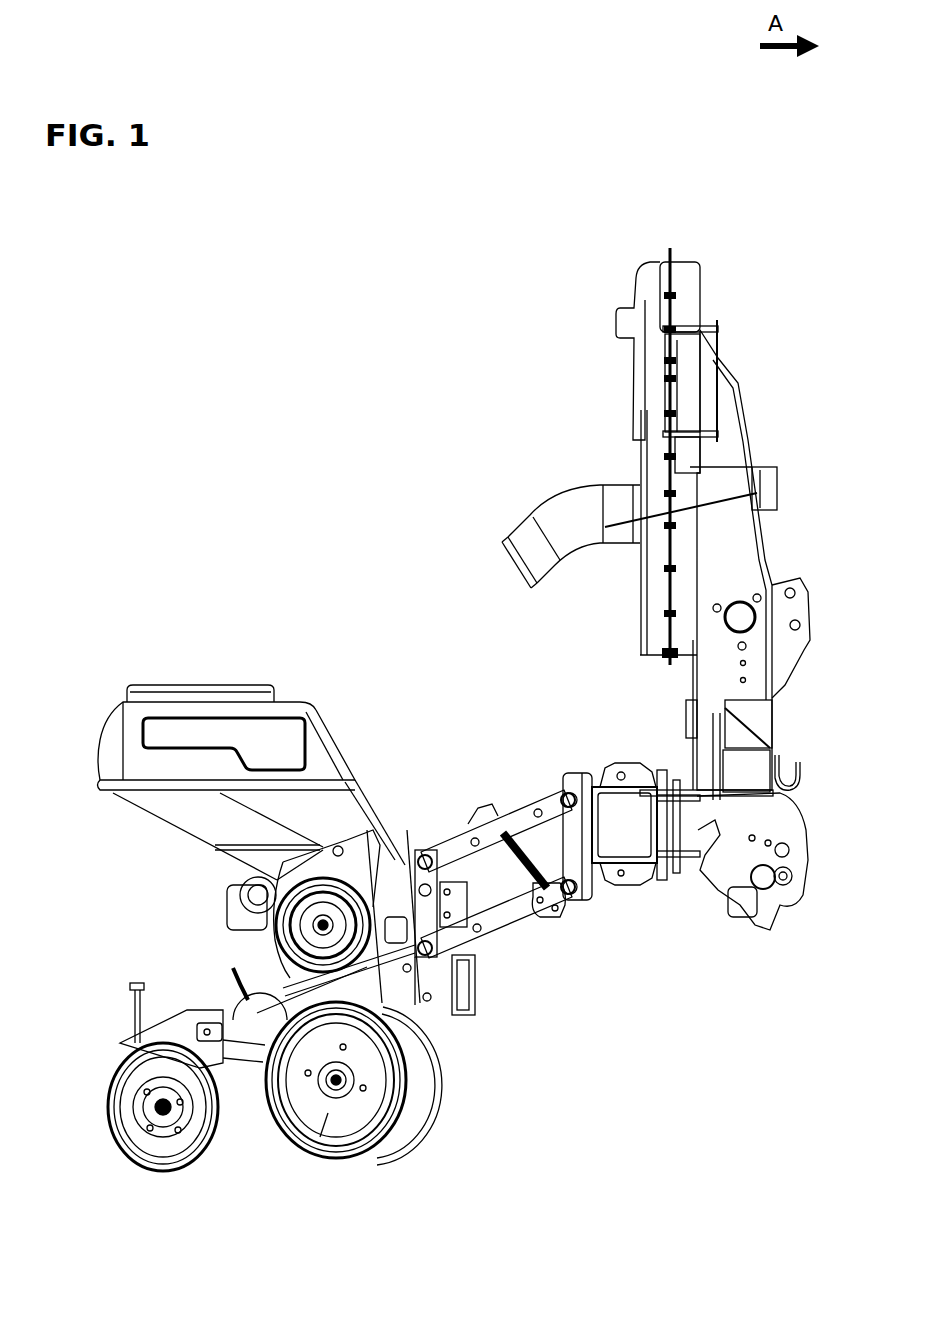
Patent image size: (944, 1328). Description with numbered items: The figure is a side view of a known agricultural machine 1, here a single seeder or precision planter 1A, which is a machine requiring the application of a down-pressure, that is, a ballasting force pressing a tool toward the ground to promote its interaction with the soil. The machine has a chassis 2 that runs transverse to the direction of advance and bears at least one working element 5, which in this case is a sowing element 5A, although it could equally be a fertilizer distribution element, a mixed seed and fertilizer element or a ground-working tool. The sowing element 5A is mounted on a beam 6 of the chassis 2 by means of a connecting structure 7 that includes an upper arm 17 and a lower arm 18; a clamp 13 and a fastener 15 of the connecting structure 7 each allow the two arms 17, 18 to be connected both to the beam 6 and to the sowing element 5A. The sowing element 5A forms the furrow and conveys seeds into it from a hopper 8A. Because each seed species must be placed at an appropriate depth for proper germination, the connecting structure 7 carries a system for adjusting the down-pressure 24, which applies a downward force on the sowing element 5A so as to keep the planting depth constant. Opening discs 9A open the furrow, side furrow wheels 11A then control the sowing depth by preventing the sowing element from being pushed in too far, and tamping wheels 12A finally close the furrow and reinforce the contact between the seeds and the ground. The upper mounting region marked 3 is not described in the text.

The agricultural machine 1 is at (472, 742).
The precision planter 1A is at (345, 487).
The chassis 2 is at (702, 893).
The frame column / mounting assembly 3 is at (822, 660).
The working element 5 is at (248, 782).
The sowing element 5A is at (160, 858).
The beam 6 is at (619, 897).
The connecting structure 7 is at (545, 768).
The hopper 8A is at (345, 712).
The opening discs 9A is at (415, 1146).
The side furrow wheels 11A is at (320, 1160).
The tamping wheels 12A is at (143, 1170).
The clamp 13 is at (580, 897).
The fastener 15 is at (457, 1017).
The upper arm 17 is at (452, 835).
The lower arm 18 is at (507, 942).
The system for adjusting the down-pressure 24 is at (472, 766).